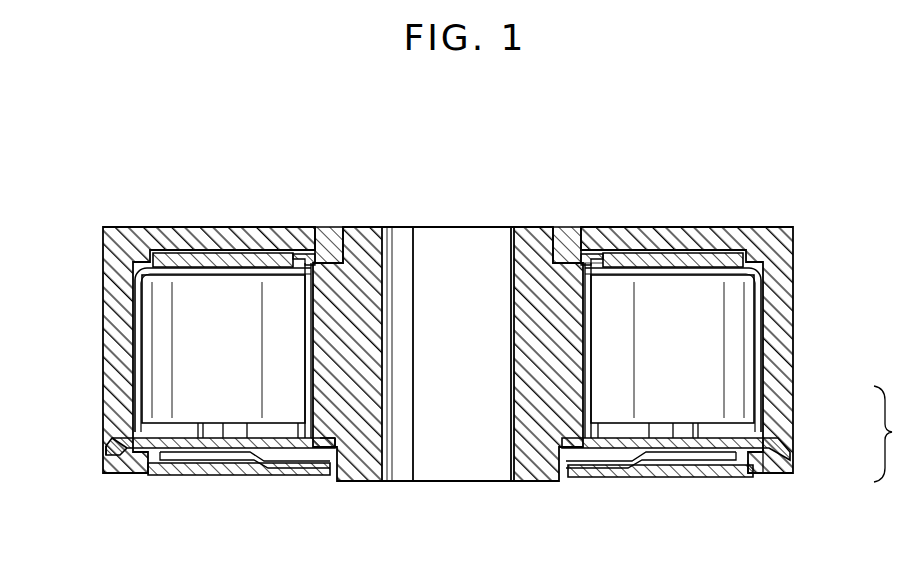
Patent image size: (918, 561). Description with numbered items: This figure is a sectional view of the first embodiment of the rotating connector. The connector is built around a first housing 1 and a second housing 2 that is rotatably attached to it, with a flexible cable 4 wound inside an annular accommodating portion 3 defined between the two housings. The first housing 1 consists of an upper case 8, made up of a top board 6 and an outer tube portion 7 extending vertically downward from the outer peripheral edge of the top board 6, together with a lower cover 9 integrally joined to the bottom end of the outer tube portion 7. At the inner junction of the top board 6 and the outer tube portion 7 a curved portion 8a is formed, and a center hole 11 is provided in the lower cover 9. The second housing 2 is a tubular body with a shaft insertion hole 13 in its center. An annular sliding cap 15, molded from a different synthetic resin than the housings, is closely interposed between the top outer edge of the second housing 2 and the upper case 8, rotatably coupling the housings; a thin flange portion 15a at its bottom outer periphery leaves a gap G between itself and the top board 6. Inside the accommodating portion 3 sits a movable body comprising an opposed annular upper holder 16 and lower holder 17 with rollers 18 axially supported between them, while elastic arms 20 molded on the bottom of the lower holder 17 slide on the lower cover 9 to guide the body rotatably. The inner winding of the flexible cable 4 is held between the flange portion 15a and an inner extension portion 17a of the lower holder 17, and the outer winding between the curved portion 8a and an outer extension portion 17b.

The first housing 1 is at (851, 431).
The second housing 2 is at (466, 218).
The accommodating portion 3 is at (630, 470).
The flexible cable 4 is at (136, 396).
The top board 6 is at (229, 248).
The outer tube portion 7 is at (110, 366).
The upper case 8 is at (806, 414).
The curved portion 8a is at (140, 263).
The lower cover 9 is at (794, 465).
The center hole 11 is at (571, 470).
The shaft insertion hole 13 is at (458, 455).
The sliding cap 15 is at (334, 247).
The flange portion 15a is at (301, 250).
The upper holder 16 is at (703, 250).
The lower holder 17 is at (200, 448).
The inner extension portion 17a is at (326, 449).
The outer extension portion 17b is at (138, 448).
The rollers 18 is at (158, 316).
The elastic arms 20 is at (247, 460).
The gap G is at (594, 252).